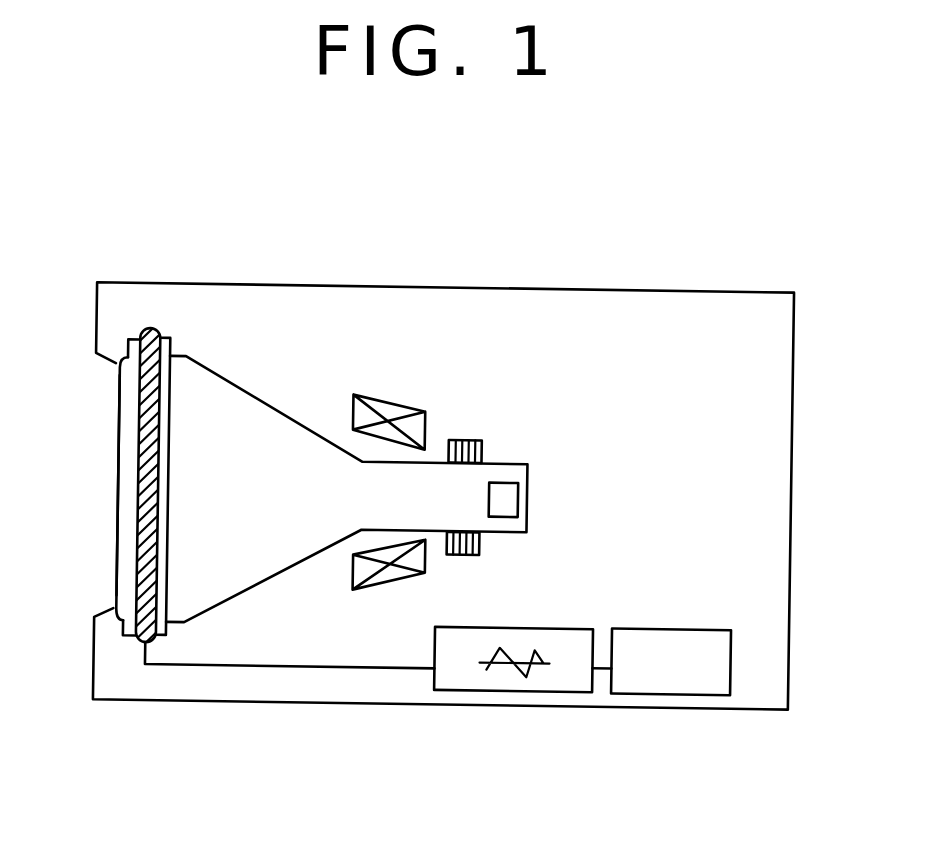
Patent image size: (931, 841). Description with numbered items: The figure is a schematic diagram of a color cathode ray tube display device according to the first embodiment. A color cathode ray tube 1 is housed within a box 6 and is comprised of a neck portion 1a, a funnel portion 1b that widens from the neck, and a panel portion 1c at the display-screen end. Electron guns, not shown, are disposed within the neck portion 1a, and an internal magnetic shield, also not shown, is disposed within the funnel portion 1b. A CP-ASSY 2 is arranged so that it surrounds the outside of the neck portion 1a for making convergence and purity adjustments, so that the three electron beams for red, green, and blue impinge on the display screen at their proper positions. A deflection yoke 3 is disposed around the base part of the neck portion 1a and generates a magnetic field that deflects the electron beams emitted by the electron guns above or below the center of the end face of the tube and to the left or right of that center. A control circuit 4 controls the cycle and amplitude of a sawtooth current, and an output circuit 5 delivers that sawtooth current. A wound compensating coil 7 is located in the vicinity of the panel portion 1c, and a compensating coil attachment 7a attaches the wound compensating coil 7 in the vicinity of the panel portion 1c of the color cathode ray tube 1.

The color cathode ray tube 1 is at (108, 528).
The neck portion 1a is at (508, 497).
The funnel portion 1b is at (294, 569).
The panel portion 1c is at (117, 402).
The CP-ASSY 2 is at (472, 440).
The deflection yoke 3 is at (397, 408).
The control circuit 4 is at (664, 627).
The output circuit 5 is at (540, 629).
The box 6 is at (792, 503).
The wound compensating coil 7 is at (140, 332).
The compensating coil attachment 7a is at (165, 342).